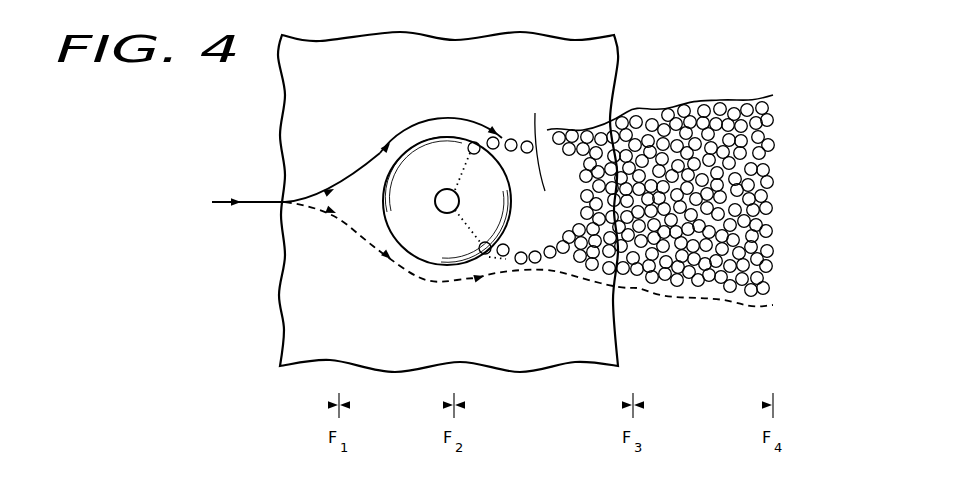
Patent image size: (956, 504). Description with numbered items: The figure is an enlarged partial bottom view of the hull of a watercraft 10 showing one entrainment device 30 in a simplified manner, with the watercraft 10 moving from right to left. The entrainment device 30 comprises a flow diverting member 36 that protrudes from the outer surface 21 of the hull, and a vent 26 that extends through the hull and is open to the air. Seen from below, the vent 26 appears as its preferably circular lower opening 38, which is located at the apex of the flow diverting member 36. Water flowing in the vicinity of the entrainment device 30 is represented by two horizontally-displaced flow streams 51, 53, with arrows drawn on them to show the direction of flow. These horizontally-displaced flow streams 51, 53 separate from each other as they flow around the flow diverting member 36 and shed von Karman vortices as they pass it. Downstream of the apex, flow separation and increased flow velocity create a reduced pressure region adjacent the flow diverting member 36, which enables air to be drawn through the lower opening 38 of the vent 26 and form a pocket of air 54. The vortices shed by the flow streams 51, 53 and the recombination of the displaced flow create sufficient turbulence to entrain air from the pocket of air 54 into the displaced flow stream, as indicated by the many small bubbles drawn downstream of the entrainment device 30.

The watercraft 10 is at (675, 74).
The outer surface 21 is at (327, 80).
The vent 26 is at (441, 199).
The entrainment device 30 is at (364, 146).
The flow diverting member 36 is at (410, 222).
The lower opening 38 is at (444, 212).
The horizontally-displaced flow stream 51 is at (452, 117).
The horizontally-displaced flow stream 53 is at (463, 283).
The pocket of air 54 is at (533, 143).